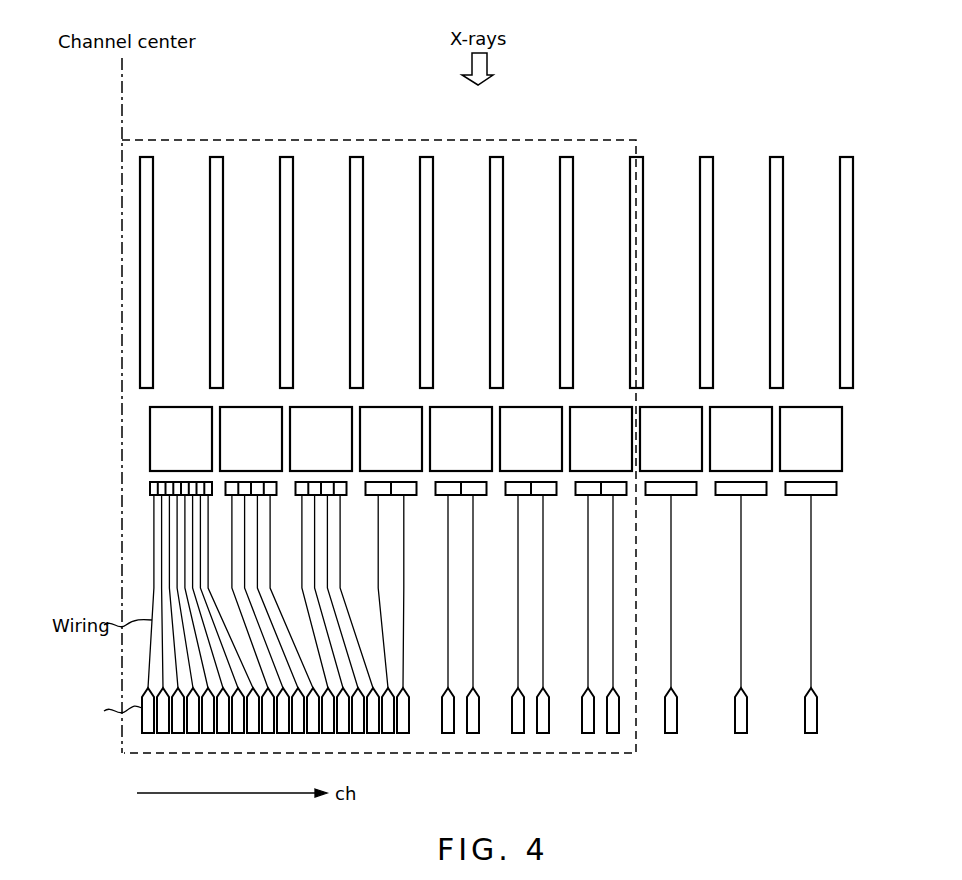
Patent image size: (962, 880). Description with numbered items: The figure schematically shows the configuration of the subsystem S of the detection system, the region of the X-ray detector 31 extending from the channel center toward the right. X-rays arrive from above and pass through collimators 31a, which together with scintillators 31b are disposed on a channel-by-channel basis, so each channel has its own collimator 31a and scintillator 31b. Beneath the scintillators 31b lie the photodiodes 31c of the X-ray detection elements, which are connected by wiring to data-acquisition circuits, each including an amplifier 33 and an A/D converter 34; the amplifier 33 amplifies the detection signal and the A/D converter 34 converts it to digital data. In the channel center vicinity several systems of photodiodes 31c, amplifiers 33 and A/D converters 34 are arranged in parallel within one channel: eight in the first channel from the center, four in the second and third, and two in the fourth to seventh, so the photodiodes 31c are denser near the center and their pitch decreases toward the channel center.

The X-ray detector 31 is at (877, 150).
The collimator 31a is at (140, 300).
The scintillator 31b is at (150, 436).
The photodiode 31c is at (150, 488).
The amplifier 33 is at (478, 705).
The A/D converter 34 is at (422, 710).
The subsystem S is at (292, 140).